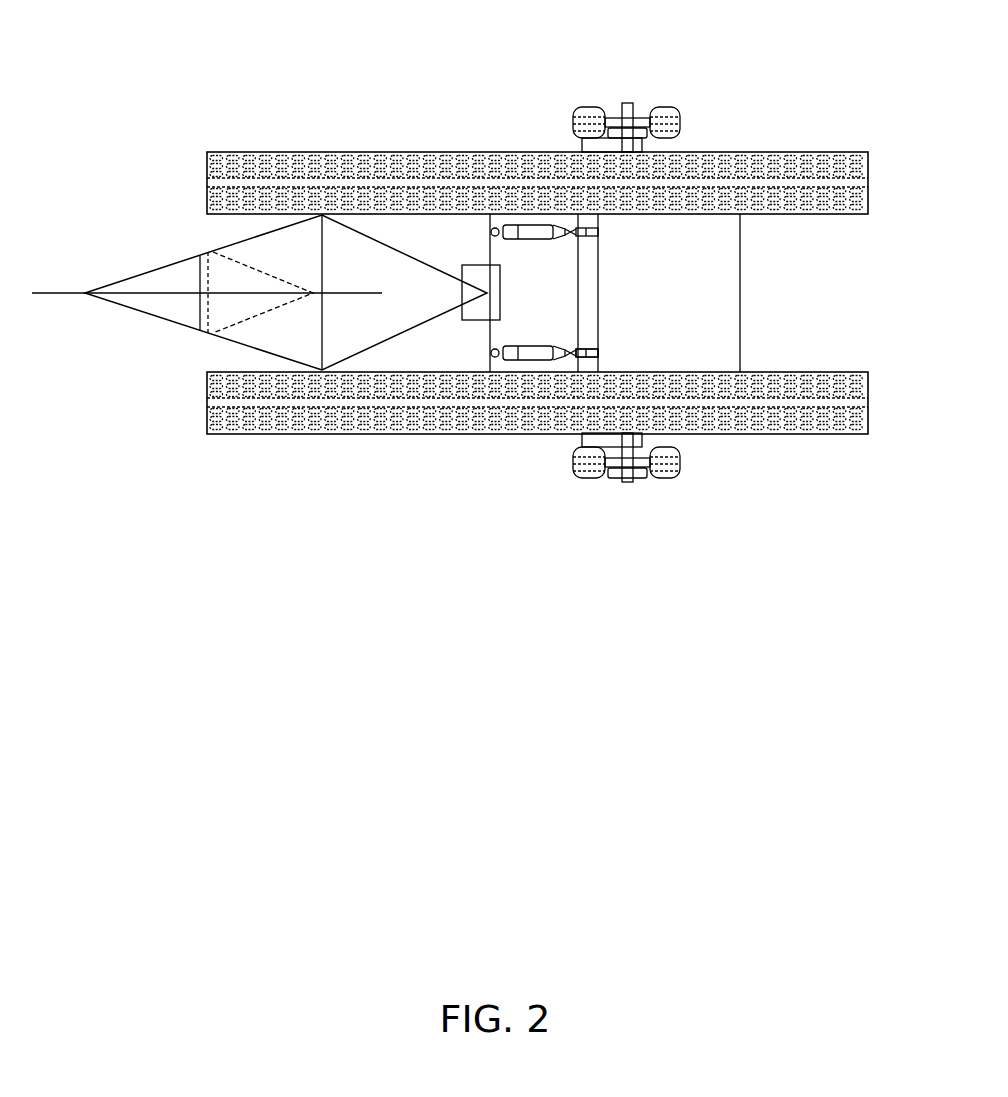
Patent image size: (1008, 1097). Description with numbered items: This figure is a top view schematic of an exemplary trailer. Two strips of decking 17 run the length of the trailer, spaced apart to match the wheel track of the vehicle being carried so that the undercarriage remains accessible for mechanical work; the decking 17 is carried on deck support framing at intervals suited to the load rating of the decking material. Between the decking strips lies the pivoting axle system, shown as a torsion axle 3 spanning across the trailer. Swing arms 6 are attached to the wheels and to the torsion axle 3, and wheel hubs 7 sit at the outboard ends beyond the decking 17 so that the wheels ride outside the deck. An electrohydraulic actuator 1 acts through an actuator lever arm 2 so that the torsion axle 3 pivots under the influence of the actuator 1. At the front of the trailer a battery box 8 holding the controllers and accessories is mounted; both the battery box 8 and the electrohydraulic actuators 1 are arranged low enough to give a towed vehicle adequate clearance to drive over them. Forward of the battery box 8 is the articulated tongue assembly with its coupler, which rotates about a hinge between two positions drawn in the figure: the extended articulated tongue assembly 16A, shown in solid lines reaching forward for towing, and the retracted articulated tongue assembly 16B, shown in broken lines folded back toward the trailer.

The electrohydraulic actuator 1 is at (533, 353).
The actuator lever arm 2 is at (600, 353).
The torsion axle 3 is at (588, 263).
The swing arm 6 is at (597, 438).
The wheel hub 7 is at (625, 477).
The battery box with controllers and accessories 8 is at (473, 270).
The extended articulated tongue assembly 16A is at (150, 268).
The retracted articulated tongue assembly 16B is at (243, 283).
The decking 17 is at (700, 385).